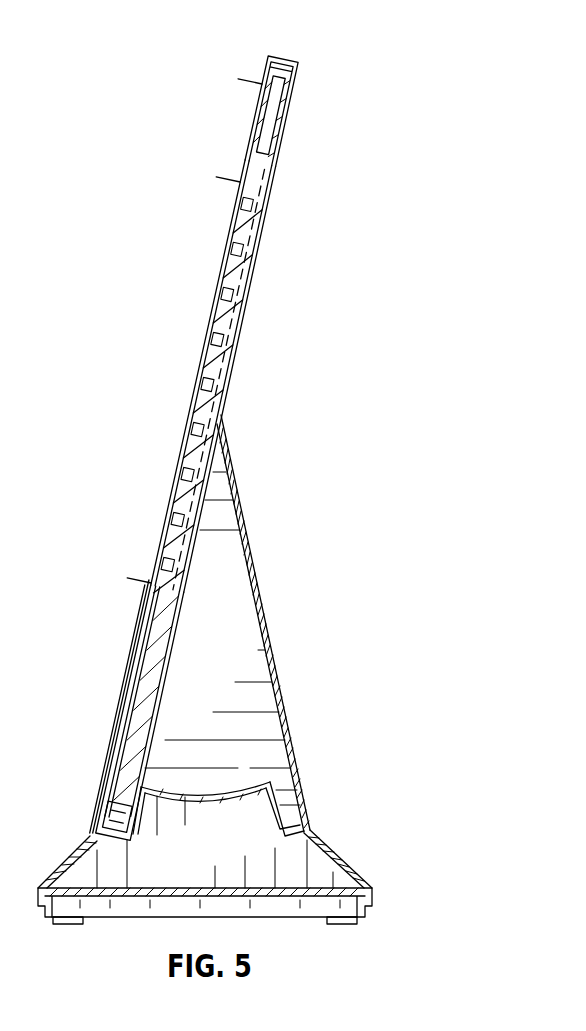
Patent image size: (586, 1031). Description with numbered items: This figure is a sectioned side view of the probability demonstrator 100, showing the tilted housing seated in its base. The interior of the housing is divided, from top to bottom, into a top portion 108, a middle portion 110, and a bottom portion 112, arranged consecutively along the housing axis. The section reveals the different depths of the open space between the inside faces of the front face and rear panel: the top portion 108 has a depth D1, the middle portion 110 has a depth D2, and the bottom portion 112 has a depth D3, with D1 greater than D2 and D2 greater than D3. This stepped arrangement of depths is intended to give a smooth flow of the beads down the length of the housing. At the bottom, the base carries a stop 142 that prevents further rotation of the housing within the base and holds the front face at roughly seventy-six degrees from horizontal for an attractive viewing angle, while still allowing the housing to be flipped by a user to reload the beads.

The probability demonstrator 100 is at (332, 34).
The top portion 108 is at (242, 62).
The middle portion 110 is at (236, 186).
The bottom portion 112 is at (141, 578).
The stop 142 is at (135, 812).
The depth of top portion D1 is at (298, 89).
The depth of middle portion D2 is at (277, 188).
The depth of bottom portion D3 is at (190, 589).